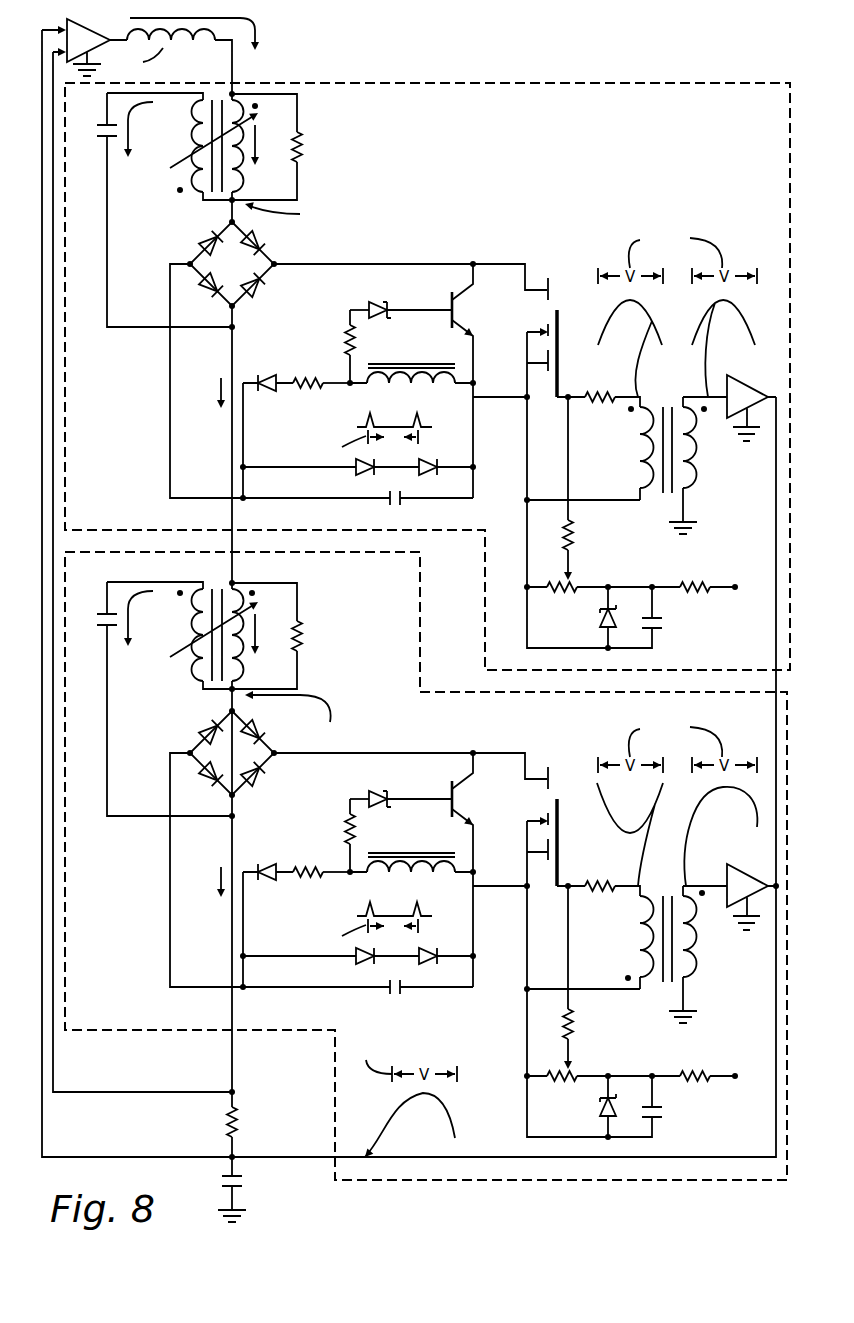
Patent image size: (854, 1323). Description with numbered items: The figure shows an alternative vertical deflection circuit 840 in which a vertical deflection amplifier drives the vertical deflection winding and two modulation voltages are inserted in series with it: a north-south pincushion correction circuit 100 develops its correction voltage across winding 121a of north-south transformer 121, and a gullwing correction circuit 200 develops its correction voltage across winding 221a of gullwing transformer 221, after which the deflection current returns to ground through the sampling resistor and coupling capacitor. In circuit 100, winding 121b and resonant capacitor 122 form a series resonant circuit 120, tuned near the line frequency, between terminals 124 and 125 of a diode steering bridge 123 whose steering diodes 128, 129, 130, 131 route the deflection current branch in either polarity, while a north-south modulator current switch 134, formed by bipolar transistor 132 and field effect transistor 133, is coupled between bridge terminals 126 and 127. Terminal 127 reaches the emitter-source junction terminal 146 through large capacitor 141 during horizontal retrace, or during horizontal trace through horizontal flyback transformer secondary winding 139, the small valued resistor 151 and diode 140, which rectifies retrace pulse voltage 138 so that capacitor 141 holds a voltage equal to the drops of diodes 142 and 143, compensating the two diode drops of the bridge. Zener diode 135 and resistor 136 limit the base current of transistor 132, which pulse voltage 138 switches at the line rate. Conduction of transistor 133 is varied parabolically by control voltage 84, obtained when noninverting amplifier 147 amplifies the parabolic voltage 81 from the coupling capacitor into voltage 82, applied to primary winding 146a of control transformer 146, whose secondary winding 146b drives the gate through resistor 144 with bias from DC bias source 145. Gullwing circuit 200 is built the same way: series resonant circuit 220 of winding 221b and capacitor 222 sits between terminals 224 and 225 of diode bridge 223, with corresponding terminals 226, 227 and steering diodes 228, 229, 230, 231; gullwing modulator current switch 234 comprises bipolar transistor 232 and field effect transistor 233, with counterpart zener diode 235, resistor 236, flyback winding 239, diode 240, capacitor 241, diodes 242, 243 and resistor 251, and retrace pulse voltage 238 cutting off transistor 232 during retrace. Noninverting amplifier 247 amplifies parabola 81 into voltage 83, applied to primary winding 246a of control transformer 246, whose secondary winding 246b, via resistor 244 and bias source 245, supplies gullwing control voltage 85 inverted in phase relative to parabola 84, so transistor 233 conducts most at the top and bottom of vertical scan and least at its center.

The vertical deflection circuit 840 is at (488, 63).
The north-south pincushion correction circuit 100 is at (350, 92).
The gullwing correction circuit 200 is at (545, 696).
The parabolic voltage 81 is at (400, 1102).
The in-phase parabolic voltage 82 is at (748, 305).
The noninverted parabolic output voltage 83 is at (729, 821).
The vertical rate control voltage 84 is at (652, 308).
The gullwing correction control voltage 85 is at (659, 803).
The series resonant circuit 120 is at (158, 208).
The north-south transformer 121 is at (219, 93).
The winding 121a is at (246, 189).
The winding 121b is at (168, 138).
The resonant capacitor 122 is at (96, 130).
The diode steering bridge circuit 123 is at (247, 283).
The bridge terminal 124 is at (230, 222).
The bridge terminal 125 is at (236, 307).
The bridge terminal 126 is at (276, 263).
The bridge terminal 127 is at (210, 283).
The current steering diode 128 is at (256, 248).
The steering diode 129 is at (230, 308).
The current steering diode 130 is at (262, 290).
The current steering diode 131 is at (204, 236).
The bipolar transistor 132 is at (462, 286).
The field effect transistor 133 is at (554, 277).
The north-south modulator current switch 134 is at (513, 319).
The zener diode 135 is at (371, 297).
The resistor 136 is at (340, 335).
The retrace pulse voltage 138 is at (423, 430).
The horizontal flyback transformer secondary winding 139 is at (422, 362).
The diode 140 is at (278, 376).
The capacitor 141 is at (389, 500).
The diode 142 is at (358, 474).
The diode 143 is at (432, 474).
The resistor 144 is at (617, 402).
The DC bias source 145 is at (628, 579).
The control transformer 146 is at (477, 400).
The primary winding 146a is at (690, 496).
The secondary winding 146b is at (652, 442).
The noninverting amplifier 147 is at (722, 405).
The resistor 151 is at (306, 388).
The series resonant circuit 220 is at (266, 690).
The gullwing transformer 221 is at (291, 653).
The winding 221a is at (261, 639).
The winding 221b is at (159, 640).
The resonant capacitor 222 is at (91, 615).
The diode bridge 223 is at (313, 843).
The bridge terminal 224 is at (204, 711).
The bridge terminal 225 is at (263, 803).
The bridge output terminal 226 is at (373, 738).
The diode 227 is at (196, 778).
The diode 228 is at (271, 722).
The bridge terminal 229 is at (206, 868).
The current steering diode 230 is at (278, 776).
The current steering diode 231 is at (186, 732).
The bipolar transistor 232 is at (431, 870).
The field effect transistor 233 is at (543, 799).
The gullwing modulator current switch 234 is at (375, 883).
The zener diode 235 is at (380, 797).
The resistor 236 is at (322, 835).
The retrace pulse voltage 238 is at (374, 925).
The inductor 239 is at (411, 847).
The diode 240 is at (268, 864).
The capacitor 241 is at (358, 997).
The diode 242 is at (331, 966).
The diode 243 is at (446, 966).
The resistor 244 is at (604, 902).
The bias voltage regulator 245 is at (647, 1013).
The control transformer 246 is at (613, 981).
The primary winding 246a is at (709, 962).
The secondary winding 246b is at (613, 936).
The noninverting amplifier 247 is at (742, 934).
The resistor 251 is at (306, 886).